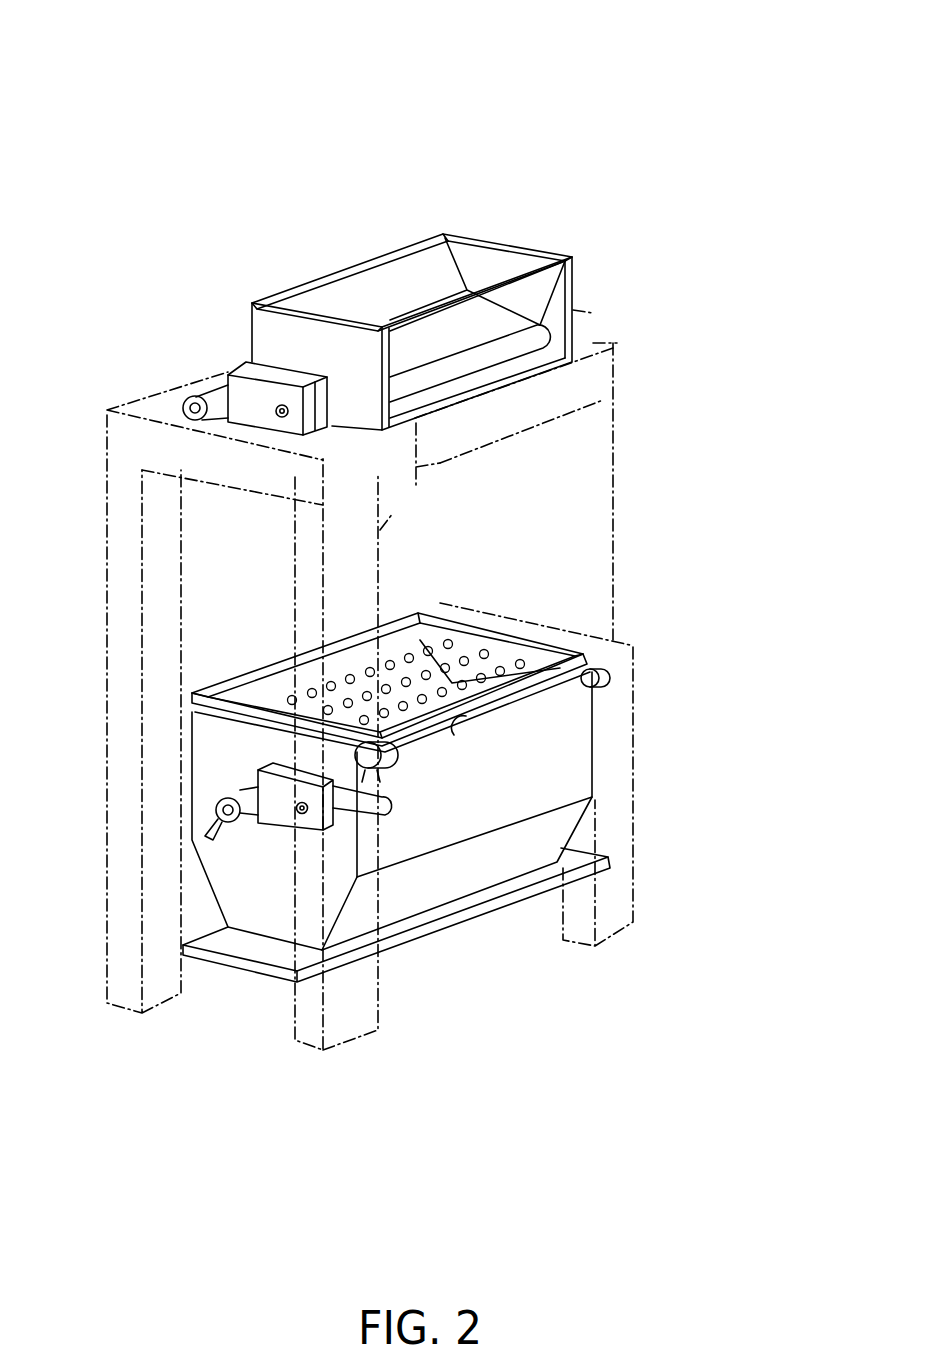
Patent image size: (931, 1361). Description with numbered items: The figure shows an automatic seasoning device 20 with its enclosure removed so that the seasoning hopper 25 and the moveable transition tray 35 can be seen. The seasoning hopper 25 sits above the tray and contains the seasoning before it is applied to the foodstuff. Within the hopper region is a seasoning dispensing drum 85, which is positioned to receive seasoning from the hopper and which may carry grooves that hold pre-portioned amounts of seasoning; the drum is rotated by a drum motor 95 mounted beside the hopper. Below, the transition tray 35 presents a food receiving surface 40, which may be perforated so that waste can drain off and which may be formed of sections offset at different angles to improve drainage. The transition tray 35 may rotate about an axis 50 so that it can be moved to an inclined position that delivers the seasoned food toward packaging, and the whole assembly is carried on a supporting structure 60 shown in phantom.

The automatic seasoning device 20 is at (712, 76).
The seasoning hopper 25 is at (498, 262).
The moveable transition tray 35 is at (460, 826).
The food receiving surface 40 is at (438, 655).
The axis 50 is at (477, 727).
The support frame 60 is at (148, 391).
The seasoning dispensing drum 85 is at (503, 348).
The drum motor 95 is at (213, 397).